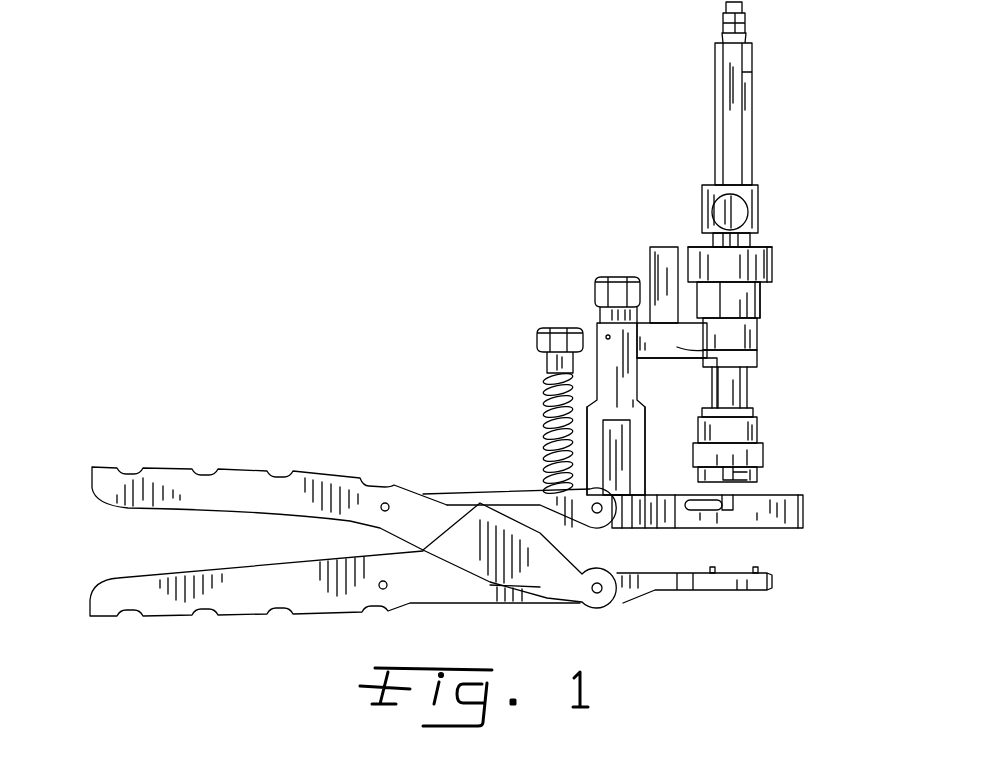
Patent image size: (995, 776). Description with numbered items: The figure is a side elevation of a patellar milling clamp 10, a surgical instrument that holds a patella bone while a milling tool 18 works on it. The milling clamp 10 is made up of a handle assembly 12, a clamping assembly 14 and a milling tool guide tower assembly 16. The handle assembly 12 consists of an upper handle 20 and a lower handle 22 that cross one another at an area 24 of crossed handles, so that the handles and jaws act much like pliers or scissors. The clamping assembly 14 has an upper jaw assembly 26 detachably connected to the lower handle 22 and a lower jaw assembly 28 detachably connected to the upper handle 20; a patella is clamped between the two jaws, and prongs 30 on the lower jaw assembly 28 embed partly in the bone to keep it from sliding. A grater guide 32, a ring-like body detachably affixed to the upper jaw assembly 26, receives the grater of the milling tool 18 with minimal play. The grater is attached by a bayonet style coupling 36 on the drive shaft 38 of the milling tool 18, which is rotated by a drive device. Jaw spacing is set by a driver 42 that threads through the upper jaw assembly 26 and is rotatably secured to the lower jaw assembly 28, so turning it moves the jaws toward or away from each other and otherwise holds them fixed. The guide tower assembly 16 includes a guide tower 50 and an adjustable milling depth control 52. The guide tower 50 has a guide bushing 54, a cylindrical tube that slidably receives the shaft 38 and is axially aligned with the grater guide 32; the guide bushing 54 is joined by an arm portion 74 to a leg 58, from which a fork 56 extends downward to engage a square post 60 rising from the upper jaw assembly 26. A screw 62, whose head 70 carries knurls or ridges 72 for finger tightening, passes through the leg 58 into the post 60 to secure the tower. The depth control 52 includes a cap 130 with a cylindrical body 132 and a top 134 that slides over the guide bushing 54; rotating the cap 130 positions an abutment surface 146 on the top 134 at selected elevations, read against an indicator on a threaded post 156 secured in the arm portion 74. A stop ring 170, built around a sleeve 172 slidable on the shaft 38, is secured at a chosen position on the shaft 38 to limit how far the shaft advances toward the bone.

The patellar milling clamp 10 is at (408, 130).
The handle assembly 12 is at (350, 435).
The clamping assembly 14 is at (800, 570).
The milling tool guide tower assembly 16 is at (650, 178).
The milling tool 18 is at (793, 428).
The upper handle 20 is at (160, 472).
The lower handle 22 is at (168, 605).
The area of crossed handles 24 is at (467, 527).
The upper jaw assembly 26 is at (667, 520).
The lower jaw assembly 28 is at (767, 590).
The prongs 30 is at (712, 568).
The grater guide 32 is at (800, 510).
The bayonet style coupling 36 is at (763, 452).
The drive shaft 38 is at (757, 380).
The driver 42 is at (523, 357).
The guide tower 50 is at (652, 368).
The adjustable milling depth control 52 is at (777, 237).
The guide bushing 54 is at (758, 334).
The fork 56 is at (640, 448).
The leg 58 is at (610, 386).
The post 60 is at (618, 458).
The screw 62 is at (585, 292).
The head 70 is at (613, 277).
The knurls or ridges 72 is at (636, 275).
The arm portion 74 is at (758, 355).
The cap 130 is at (793, 273).
The cylindrical body 132 is at (760, 298).
The top 134 is at (770, 255).
The abutment surface 146 is at (700, 240).
The post 156 is at (665, 247).
The stop ring 170 is at (757, 175).
The sleeve 172 is at (760, 192).